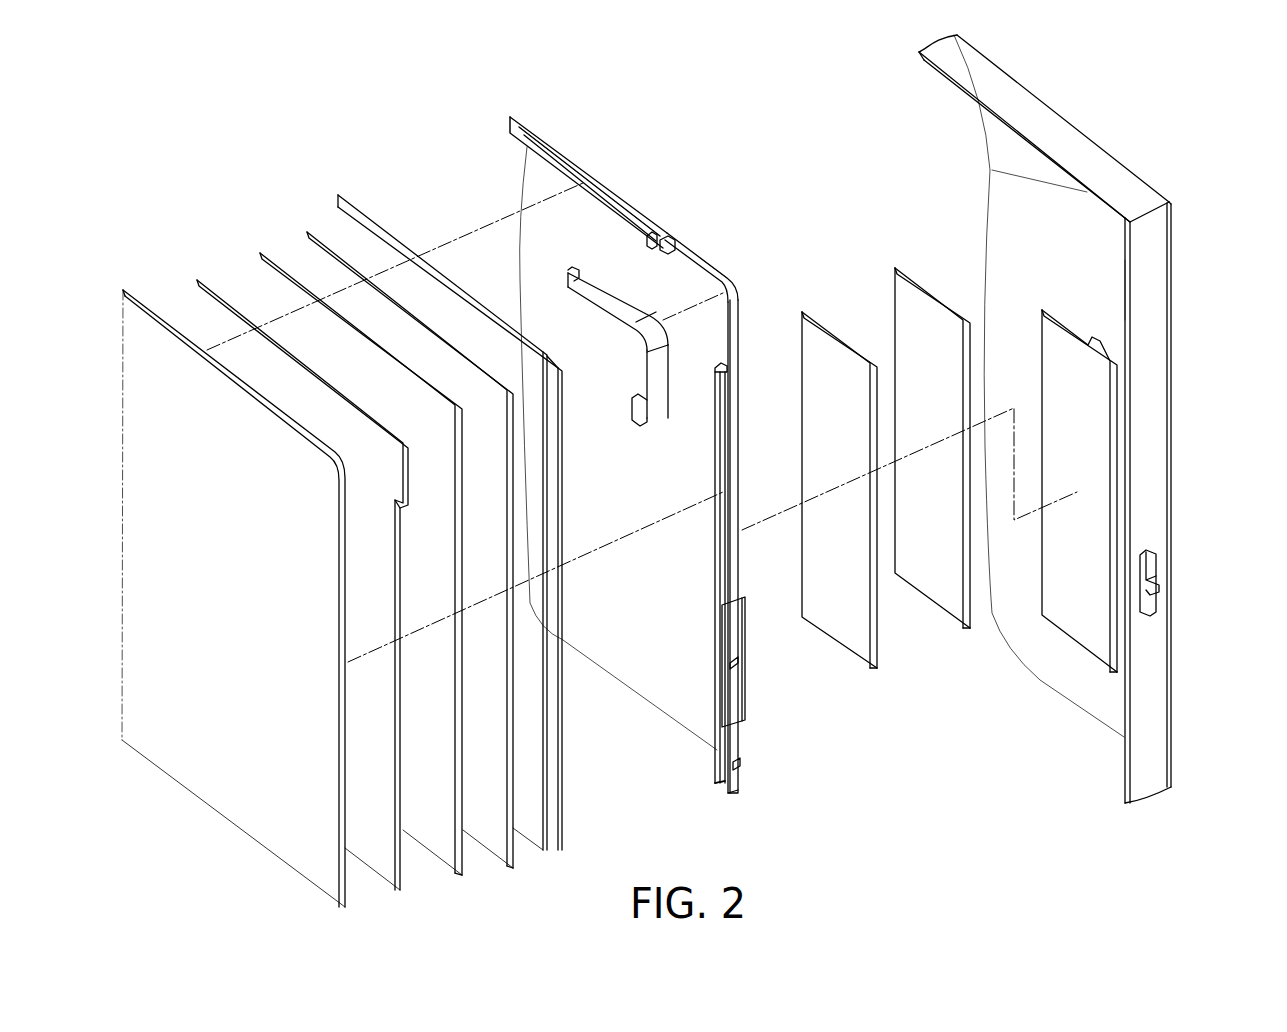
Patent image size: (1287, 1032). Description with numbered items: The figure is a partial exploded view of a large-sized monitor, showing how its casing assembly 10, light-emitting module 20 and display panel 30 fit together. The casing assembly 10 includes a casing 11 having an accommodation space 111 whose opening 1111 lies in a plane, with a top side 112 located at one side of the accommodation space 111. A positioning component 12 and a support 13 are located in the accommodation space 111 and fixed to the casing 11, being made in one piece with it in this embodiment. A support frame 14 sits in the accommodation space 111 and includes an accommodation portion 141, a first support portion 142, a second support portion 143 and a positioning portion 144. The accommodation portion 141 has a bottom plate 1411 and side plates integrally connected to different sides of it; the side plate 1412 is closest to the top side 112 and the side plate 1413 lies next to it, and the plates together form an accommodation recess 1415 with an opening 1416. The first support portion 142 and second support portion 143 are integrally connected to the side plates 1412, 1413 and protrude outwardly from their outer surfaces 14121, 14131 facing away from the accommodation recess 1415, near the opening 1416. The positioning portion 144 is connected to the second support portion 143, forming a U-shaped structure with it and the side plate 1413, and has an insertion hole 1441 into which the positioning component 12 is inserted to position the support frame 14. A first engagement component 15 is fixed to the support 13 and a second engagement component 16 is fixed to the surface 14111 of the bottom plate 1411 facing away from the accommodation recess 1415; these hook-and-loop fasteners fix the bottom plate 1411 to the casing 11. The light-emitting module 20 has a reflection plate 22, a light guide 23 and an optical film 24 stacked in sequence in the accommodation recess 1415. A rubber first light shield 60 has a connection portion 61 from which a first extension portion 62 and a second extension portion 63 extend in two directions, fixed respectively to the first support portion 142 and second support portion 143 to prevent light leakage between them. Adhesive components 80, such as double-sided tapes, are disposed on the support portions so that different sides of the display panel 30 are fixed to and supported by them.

The casing assembly 10 is at (1095, 427).
The casing 11 is at (1095, 430).
The accommodation space 111 is at (1070, 720).
The top side 112 is at (1088, 160).
The opening 1111 is at (1113, 275).
The positioning component 12 is at (1157, 607).
The support 13 is at (1077, 600).
The support frame 14 is at (653, 464).
The accommodation portion 141 is at (549, 163).
The first support portion 142 is at (552, 152).
The opening 1416 is at (512, 152).
The accommodation recess 1415 is at (547, 252).
The outer surface 14121 is at (668, 230).
The side plate 1412 is at (688, 250).
The surface 14111 is at (726, 260).
The bottom plate 1411 is at (737, 290).
The side plate 1413 is at (725, 365).
The positioning portion 144 is at (780, 671).
The insertion hole 1441 is at (748, 660).
The outer surface 14131 is at (740, 760).
The second support portion 143 is at (720, 785).
The first engagement component 15 is at (945, 593).
The second engagement component 16 is at (850, 627).
The light-emitting module 20 is at (338, 511).
The reflection plate 22 is at (313, 260).
The light guide 23 is at (262, 283).
The optical film 24 is at (203, 313).
The display panel 30 is at (133, 330).
The first light shield 60 is at (628, 344).
The connection portion 61 is at (640, 320).
The first extension portion 62 is at (608, 282).
The second extension portion 63 is at (657, 383).
The adhesive component 80 is at (375, 218).